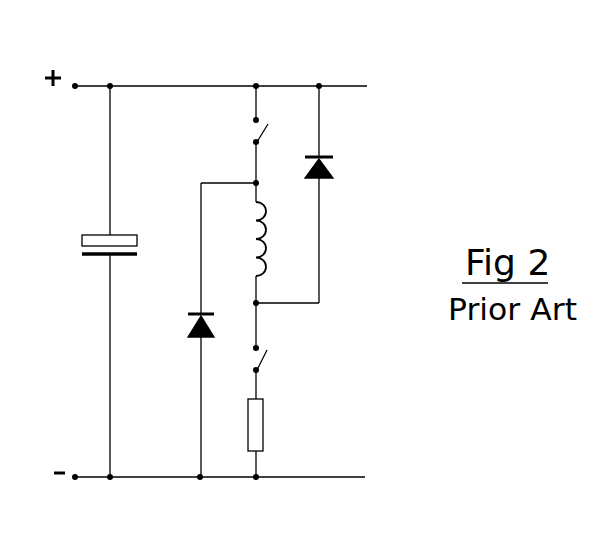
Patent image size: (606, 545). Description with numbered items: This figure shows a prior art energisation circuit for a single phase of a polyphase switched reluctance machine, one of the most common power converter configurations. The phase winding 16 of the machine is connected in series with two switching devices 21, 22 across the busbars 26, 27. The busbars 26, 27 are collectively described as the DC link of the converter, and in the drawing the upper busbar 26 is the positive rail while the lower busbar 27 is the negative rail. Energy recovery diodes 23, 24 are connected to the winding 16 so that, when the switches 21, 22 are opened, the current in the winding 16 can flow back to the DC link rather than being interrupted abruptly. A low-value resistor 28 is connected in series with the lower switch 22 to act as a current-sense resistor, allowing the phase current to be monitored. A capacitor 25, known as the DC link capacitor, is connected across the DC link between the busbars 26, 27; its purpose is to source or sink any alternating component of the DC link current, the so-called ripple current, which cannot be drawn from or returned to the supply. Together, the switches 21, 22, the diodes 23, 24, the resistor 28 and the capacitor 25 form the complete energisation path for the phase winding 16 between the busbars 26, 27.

The phase winding 16 is at (269, 220).
The switching device 21 is at (253, 131).
The switching device 22 is at (269, 358).
The energy recovery diode 23 is at (335, 167).
The energy recovery diode 24 is at (188, 319).
The capacitor 25 is at (78, 247).
The busbar 26 is at (179, 86).
The busbar 27 is at (160, 478).
The resistor 28 is at (264, 424).